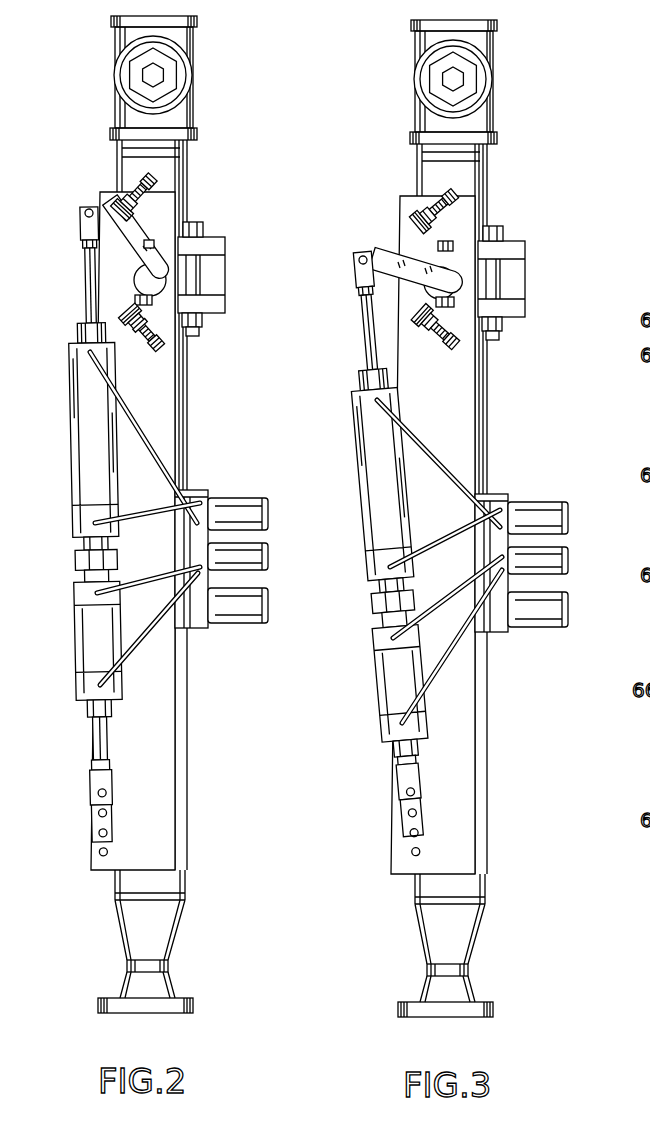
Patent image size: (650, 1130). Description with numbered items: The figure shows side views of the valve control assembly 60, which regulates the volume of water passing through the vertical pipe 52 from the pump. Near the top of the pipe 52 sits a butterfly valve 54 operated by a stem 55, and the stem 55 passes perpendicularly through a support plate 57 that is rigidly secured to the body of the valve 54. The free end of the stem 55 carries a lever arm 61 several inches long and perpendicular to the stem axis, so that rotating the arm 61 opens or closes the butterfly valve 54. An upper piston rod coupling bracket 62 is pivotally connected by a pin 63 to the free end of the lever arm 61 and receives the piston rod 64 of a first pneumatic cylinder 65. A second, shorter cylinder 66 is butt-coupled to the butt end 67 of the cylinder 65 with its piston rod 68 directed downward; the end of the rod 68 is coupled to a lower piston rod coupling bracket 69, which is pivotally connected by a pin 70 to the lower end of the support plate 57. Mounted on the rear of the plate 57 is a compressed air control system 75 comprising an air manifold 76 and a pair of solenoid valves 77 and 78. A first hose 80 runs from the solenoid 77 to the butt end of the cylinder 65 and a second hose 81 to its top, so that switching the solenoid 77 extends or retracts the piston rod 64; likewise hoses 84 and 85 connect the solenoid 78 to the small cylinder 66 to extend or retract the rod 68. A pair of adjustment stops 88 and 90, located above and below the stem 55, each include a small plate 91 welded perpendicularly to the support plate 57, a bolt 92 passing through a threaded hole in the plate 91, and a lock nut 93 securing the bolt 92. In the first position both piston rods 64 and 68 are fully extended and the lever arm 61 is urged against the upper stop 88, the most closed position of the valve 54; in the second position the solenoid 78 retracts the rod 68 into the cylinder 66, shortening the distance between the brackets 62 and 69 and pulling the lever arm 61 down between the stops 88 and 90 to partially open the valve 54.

In FIG. 2, the vertical pipe 52 is at (185, 178).
In FIG. 3, the vertical pipe 52 is at (482, 518).
In FIG. 2, the butterfly valve 54 is at (215, 290).
In FIG. 3, the butterfly valve 54 is at (535, 283).
In FIG. 2, the stem 55 is at (168, 281).
In FIG. 3, the stem 55 is at (440, 283).
In FIG. 2, the support plate 57 is at (167, 405).
In FIG. 3, the support plate 57 is at (468, 535).
In FIG. 2, the valve control assembly 60 is at (68, 519).
In FIG. 3, the valve control assembly 60 is at (374, 563).
In FIG. 2, the lever arm 61 is at (120, 246).
In FIG. 3, the lever arm 61 is at (425, 263).
In FIG. 2, the upper piston rod coupling bracket 62 is at (80, 226).
In FIG. 3, the upper piston rod coupling bracket 62 is at (357, 278).
In FIG. 2, the pin 63 is at (88, 206).
In FIG. 3, the pin 63 is at (360, 255).
In FIG. 2, the piston rod 64 is at (85, 298).
In FIG. 3, the piston rod 64 is at (365, 327).
In FIG. 2, the first pneumatic cylinder 65 is at (87, 432).
In FIG. 3, the first pneumatic cylinder 65 is at (395, 506).
In FIG. 2, the second cylinder 66 is at (85, 668).
In FIG. 3, the second cylinder 66 is at (390, 683).
In FIG. 2, the butt end 67 is at (85, 516).
In FIG. 3, the butt end 67 is at (393, 602).
In FIG. 2, the piston rod 68 is at (95, 742).
In FIG. 3, the piston rod 68 is at (406, 760).
In FIG. 2, the lower piston rod coupling bracket 69 is at (95, 782).
In FIG. 3, the lower piston rod coupling bracket 69 is at (405, 785).
In FIG. 2, the pin 70 is at (110, 796).
In FIG. 3, the pin 70 is at (412, 800).
In FIG. 2, the compressed air control system 75 is at (254, 542).
In FIG. 3, the compressed air control system 75 is at (559, 561).
In FIG. 2, the air manifold 76 is at (205, 490).
In FIG. 3, the air manifold 76 is at (491, 563).
In FIG. 2, the solenoid valve 77 is at (255, 508).
In FIG. 3, the solenoid valve 77 is at (559, 512).
In FIG. 2, the solenoid valve 78 is at (250, 566).
In FIG. 3, the solenoid valve 78 is at (575, 567).
In FIG. 2, the first hose 80 is at (130, 512).
In FIG. 3, the first hose 80 is at (435, 558).
In FIG. 2, the second hose 81 is at (165, 450).
In FIG. 3, the second hose 81 is at (414, 436).
In FIG. 2, the hose 84 is at (135, 590).
In FIG. 3, the hose 84 is at (440, 610).
In FIG. 2, the hose 85 is at (140, 650).
In FIG. 3, the hose 85 is at (440, 678).
In FIG. 2, the adjustment stop 88 is at (152, 200).
In FIG. 3, the adjustment stop 88 is at (452, 206).
In FIG. 2, the adjustment stop 90 is at (163, 328).
In FIG. 2, the small plate 91 is at (123, 192).
In FIG. 3, the small plate 91 is at (435, 209).
In FIG. 2, the bolt 92 is at (167, 352).
In FIG. 3, the bolt 92 is at (444, 335).
In FIG. 2, the lower bolt nut 93 is at (143, 340).
In FIG. 3, the lower bolt nut 93 is at (426, 318).